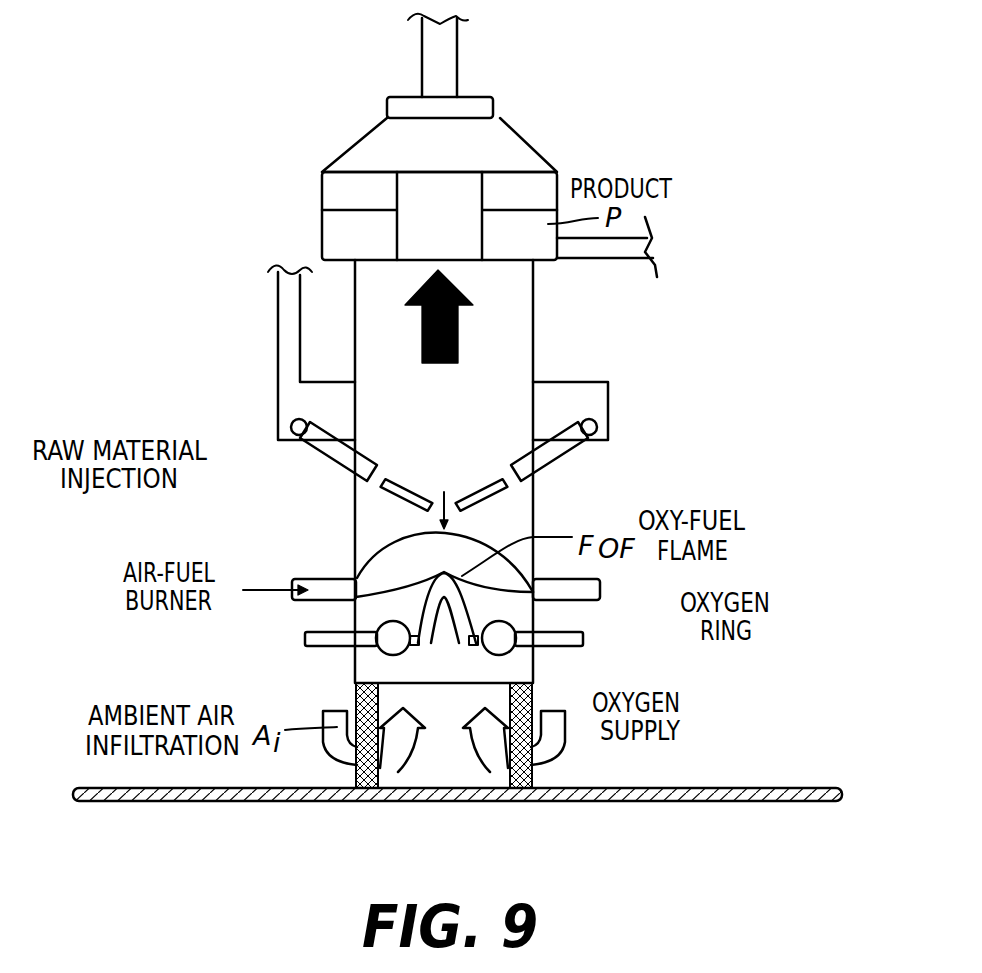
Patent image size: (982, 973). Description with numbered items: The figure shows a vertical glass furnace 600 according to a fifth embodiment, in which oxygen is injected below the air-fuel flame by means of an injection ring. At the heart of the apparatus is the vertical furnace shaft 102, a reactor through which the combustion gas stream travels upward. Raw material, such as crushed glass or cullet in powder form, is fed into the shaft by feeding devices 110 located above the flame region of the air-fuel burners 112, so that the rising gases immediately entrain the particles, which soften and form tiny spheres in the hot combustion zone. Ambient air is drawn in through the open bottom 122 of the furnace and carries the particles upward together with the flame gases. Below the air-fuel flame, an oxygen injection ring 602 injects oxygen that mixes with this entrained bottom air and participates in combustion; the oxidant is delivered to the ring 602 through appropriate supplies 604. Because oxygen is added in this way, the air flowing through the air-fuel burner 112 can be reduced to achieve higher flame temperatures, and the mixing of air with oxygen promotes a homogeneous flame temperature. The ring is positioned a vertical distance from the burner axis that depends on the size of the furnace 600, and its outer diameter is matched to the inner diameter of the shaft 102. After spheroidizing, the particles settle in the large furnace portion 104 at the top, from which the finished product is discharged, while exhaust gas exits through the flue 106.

The furnace 600 is at (210, 174).
The flue 106 is at (440, 48).
The large furnace portion 104 is at (525, 137).
The furnace shaft 102 is at (533, 327).
The raw material feeding devices 110 is at (333, 455).
The air-fuel burner 112 is at (313, 578).
The oxygen injection ring 602 is at (513, 627).
The oxygen supplies 604 is at (323, 648).
The open bottom 122 is at (372, 663).